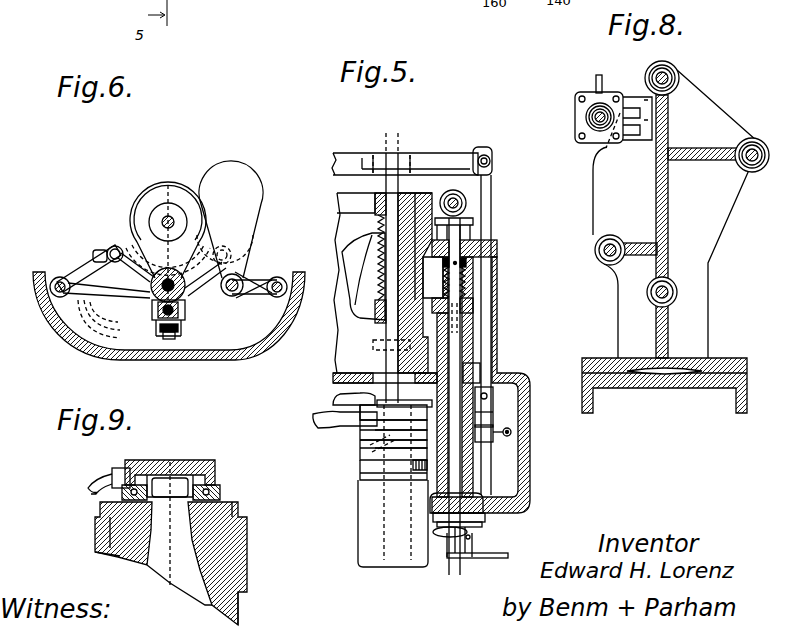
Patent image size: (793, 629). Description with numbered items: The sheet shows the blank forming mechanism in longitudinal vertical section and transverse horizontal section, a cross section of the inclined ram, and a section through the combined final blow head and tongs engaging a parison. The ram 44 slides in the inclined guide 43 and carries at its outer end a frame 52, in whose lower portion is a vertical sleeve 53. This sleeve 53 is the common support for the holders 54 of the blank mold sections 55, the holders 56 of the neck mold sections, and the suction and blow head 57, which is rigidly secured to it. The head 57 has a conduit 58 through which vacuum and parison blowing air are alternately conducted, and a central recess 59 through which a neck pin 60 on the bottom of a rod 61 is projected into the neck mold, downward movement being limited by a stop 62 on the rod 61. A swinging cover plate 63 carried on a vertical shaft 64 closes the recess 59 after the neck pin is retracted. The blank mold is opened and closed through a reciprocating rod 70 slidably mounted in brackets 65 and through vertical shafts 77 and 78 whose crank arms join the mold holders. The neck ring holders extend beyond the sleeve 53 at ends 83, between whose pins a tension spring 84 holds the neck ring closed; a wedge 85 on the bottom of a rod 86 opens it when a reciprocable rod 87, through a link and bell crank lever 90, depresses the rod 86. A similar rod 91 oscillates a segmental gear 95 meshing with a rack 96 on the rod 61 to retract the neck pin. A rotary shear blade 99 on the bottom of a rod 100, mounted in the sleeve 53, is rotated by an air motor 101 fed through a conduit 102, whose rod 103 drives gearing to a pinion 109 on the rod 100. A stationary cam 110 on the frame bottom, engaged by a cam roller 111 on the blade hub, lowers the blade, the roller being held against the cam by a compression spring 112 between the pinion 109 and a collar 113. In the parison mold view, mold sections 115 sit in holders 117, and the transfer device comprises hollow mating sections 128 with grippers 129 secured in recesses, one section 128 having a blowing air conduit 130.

In FIG. 8, the inclined guide 43 is at (686, 378).
In FIG. 8, the ram 44 is at (690, 358).
In FIG. 6, the frame 52 is at (236, 356).
In FIG. 5, the frame 52 is at (508, 373).
In FIG. 6, the vertical sleeve 53 is at (185, 300).
In FIG. 5, the vertical sleeve 53 is at (475, 363).
In FIG. 6, the holders 54 is at (108, 228).
In FIG. 5, the holders 54 is at (370, 476).
In FIG. 6, the blank mold sections 55 is at (136, 206).
In FIG. 5, the blank mold sections 55 is at (366, 527).
In FIG. 6, the holders 56 is at (130, 296).
In FIG. 5, the holders 56 is at (372, 446).
In FIG. 6, the suction and blow head 57 is at (160, 186).
In FIG. 5, the suction and blow head 57 is at (376, 422).
In FIG. 5, the conduit 58 is at (316, 424).
In FIG. 5, the central recess 59 is at (360, 404).
In FIG. 5, the neck pin 60 is at (368, 445).
In FIG. 6, the rod 61 is at (158, 194).
In FIG. 5, the rod 61 is at (386, 352).
In FIG. 6, the stop 62 is at (178, 212).
In FIG. 5, the stop 62 is at (345, 393).
In FIG. 6, the swinging cover plate 63 is at (254, 183).
In FIG. 5, the swinging cover plate 63 is at (358, 408).
In FIG. 6, the vertical shaft 64 is at (242, 293).
In FIG. 8, the bracket 65 is at (714, 236).
In FIG. 8, the reciprocating rod 70 is at (602, 264).
In FIG. 6, the vertical shaft 77 is at (57, 277).
In FIG. 6, the vertical shaft 78 is at (282, 278).
In FIG. 6, the neck ring holder ends 83 is at (184, 320).
In FIG. 5, the neck ring holder ends 83 is at (494, 438).
In FIG. 6, the tension spring 84 is at (169, 340).
In FIG. 5, the tension spring 84 is at (512, 432).
In FIG. 6, the wedge 85 is at (163, 334).
In FIG. 5, the wedge 85 is at (494, 416).
In FIG. 6, the rod 86 is at (184, 336).
In FIG. 5, the rod 86 is at (492, 316).
In FIG. 8, the reciprocable rod 87 is at (676, 80).
In FIG. 5, the bell crank lever 90 is at (443, 152).
In FIG. 8, the rod 91 is at (676, 292).
In FIG. 5, the segmental gear 95 is at (346, 300).
In FIG. 5, the rack 96 is at (380, 234).
In FIG. 6, the rotary shear blade 99 is at (88, 342).
In FIG. 5, the rotary shear blade 99 is at (490, 559).
In FIG. 6, the rod 100 is at (186, 316).
In FIG. 5, the rod 100 is at (462, 300).
In FIG. 8, the air motor 101 is at (578, 108).
In FIG. 8, the conduit 102 is at (596, 82).
In FIG. 8, the rod 103 is at (590, 120).
In FIG. 5, the pinion 109 is at (437, 298).
In FIG. 5, the stationary cam 110 is at (485, 528).
In FIG. 5, the cam roller 111 is at (449, 556).
In FIG. 5, the compression spring 112 is at (466, 282).
In FIG. 5, the collar 113 is at (462, 262).
In FIG. 9, the parison mold sections 115 is at (123, 556).
In FIG. 9, the holders 117 is at (240, 560).
In FIG. 9, the hollow mating sections 128 is at (182, 461).
In FIG. 9, the grippers 129 is at (216, 486).
In FIG. 9, the blowing air conduit 130 is at (112, 470).